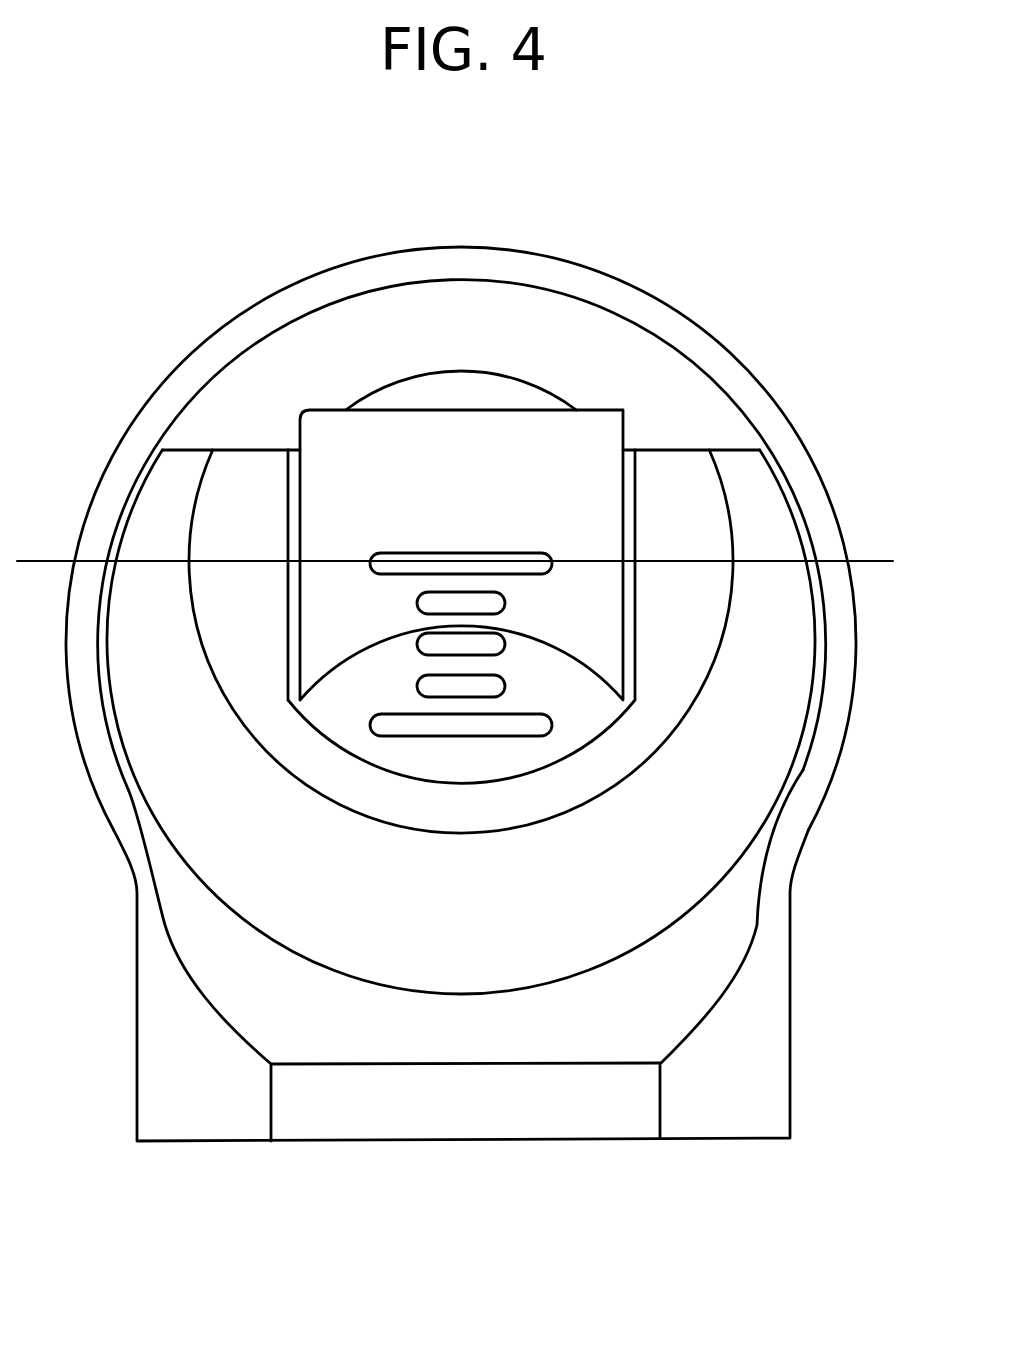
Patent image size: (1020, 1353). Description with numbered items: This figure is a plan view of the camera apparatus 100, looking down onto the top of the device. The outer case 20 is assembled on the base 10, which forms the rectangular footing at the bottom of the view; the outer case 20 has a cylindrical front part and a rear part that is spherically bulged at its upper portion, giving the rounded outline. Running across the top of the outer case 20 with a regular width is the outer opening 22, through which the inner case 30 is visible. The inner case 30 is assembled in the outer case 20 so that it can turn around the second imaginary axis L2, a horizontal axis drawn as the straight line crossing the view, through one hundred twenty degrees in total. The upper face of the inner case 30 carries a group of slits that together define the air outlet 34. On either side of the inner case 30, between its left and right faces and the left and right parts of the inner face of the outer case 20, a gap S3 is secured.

The camera apparatus 100 is at (577, 211).
The base 10 is at (790, 1045).
The outer case 20 is at (763, 490).
The outer opening 22 is at (302, 483).
The inner case 30 is at (610, 427).
The air outlet 34 is at (505, 613).
The gap S3 is at (293, 525).
The second imaginary axis L2 is at (893, 562).